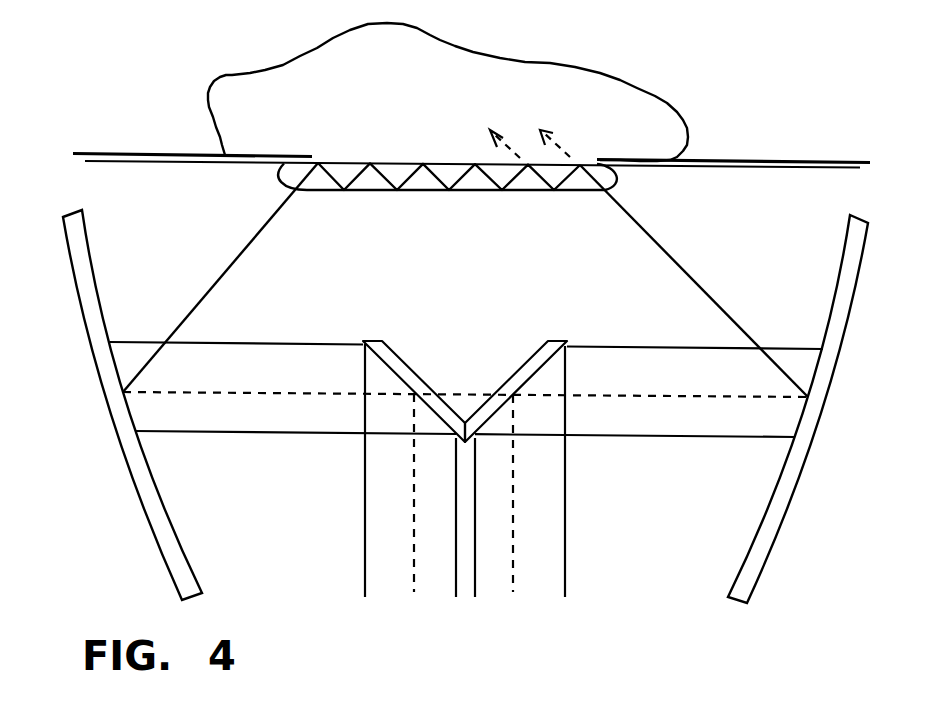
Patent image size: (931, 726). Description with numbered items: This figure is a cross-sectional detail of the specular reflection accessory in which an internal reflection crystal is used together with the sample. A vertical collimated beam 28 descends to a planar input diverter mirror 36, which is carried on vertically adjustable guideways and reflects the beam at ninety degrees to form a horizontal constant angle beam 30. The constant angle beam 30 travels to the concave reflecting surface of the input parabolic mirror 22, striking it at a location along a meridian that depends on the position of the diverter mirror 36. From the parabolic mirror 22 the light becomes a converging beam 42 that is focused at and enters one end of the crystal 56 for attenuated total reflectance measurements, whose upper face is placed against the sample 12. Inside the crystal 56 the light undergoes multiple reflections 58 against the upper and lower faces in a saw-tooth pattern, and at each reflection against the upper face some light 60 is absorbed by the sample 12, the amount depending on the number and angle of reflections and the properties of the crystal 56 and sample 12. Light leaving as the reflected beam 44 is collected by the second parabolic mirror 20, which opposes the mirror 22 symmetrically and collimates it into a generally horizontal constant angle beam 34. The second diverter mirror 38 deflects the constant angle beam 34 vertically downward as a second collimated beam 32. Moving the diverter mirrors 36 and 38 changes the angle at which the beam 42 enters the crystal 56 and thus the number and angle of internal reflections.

The sample 12 is at (645, 120).
The second parabolic mirror 20 is at (138, 487).
The input parabolic mirror 22 is at (773, 525).
The collimated beam 28 is at (548, 535).
The constant angle beam 30 is at (656, 412).
The second collimated beam 32 is at (388, 543).
The constant angle beam 34 is at (245, 408).
The input diverter mirror 36 is at (533, 367).
The second diverter mirror 38 is at (398, 360).
The converging beam 42 is at (643, 240).
The reflected beam 44 is at (267, 233).
The crystal 56 is at (625, 178).
The multiple reflections 58 is at (456, 180).
The absorbed light 60 is at (543, 125).